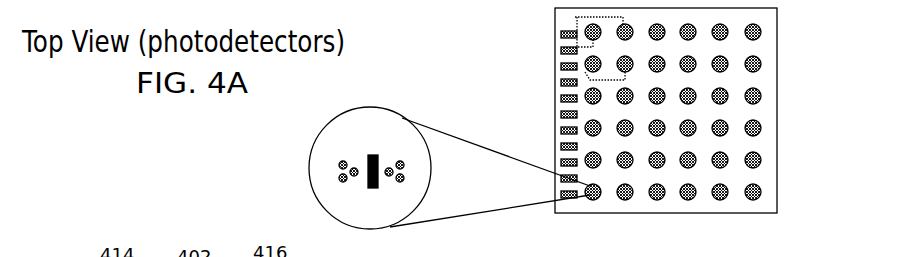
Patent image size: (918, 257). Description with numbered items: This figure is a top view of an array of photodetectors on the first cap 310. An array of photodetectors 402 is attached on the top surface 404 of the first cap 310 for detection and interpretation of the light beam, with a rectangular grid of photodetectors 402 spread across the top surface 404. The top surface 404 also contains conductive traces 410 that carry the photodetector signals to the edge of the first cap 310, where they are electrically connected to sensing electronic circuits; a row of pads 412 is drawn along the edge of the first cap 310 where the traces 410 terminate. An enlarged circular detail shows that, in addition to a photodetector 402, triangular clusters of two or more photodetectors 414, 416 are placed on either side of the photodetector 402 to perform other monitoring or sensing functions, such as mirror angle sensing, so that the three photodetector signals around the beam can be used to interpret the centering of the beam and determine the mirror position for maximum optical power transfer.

The first cap 310 is at (778, 50).
The photodetector 402 is at (584, 63).
The top surface 404 is at (770, 175).
The conductive traces 410 is at (575, 17).
The bond pad 412 is at (556, 43).
The cluster of photodetectors 414 is at (345, 160).
The cluster of photodetectors 416 is at (402, 161).